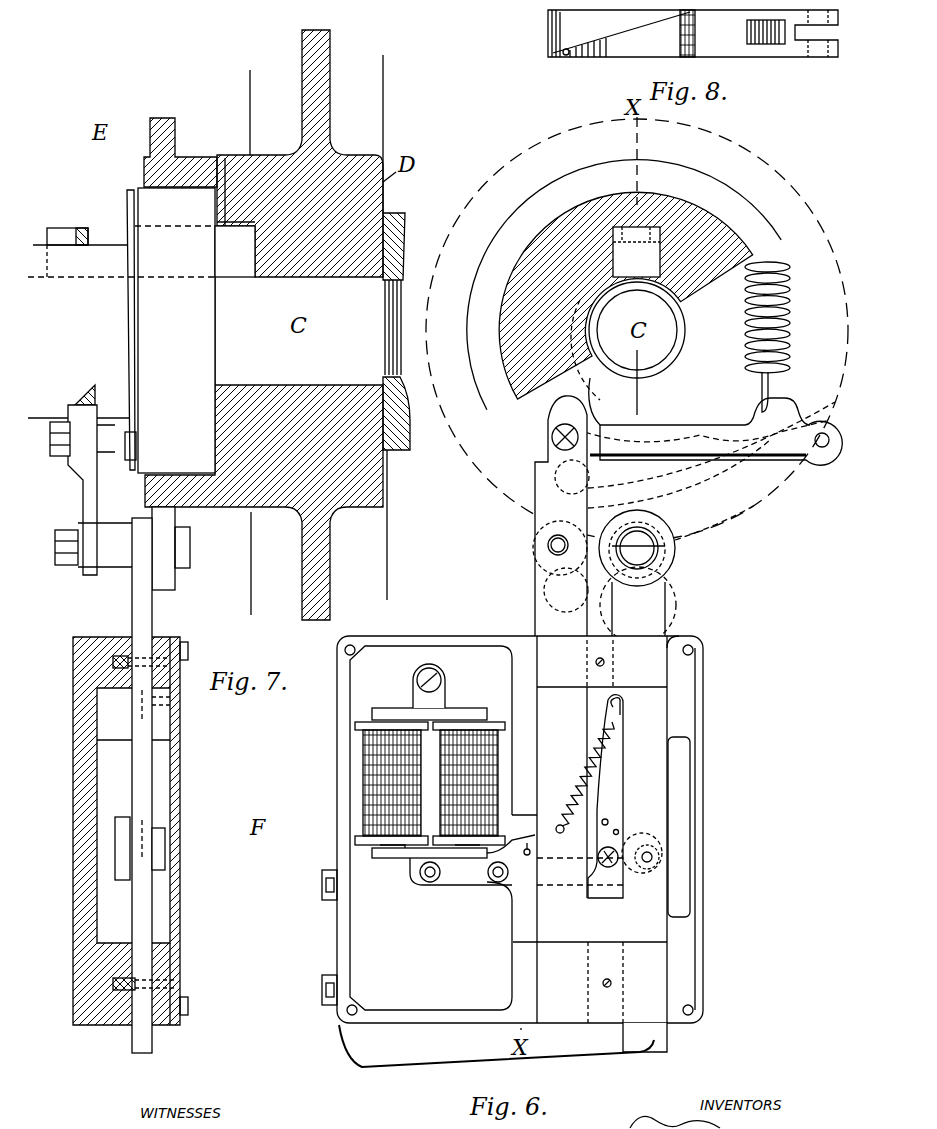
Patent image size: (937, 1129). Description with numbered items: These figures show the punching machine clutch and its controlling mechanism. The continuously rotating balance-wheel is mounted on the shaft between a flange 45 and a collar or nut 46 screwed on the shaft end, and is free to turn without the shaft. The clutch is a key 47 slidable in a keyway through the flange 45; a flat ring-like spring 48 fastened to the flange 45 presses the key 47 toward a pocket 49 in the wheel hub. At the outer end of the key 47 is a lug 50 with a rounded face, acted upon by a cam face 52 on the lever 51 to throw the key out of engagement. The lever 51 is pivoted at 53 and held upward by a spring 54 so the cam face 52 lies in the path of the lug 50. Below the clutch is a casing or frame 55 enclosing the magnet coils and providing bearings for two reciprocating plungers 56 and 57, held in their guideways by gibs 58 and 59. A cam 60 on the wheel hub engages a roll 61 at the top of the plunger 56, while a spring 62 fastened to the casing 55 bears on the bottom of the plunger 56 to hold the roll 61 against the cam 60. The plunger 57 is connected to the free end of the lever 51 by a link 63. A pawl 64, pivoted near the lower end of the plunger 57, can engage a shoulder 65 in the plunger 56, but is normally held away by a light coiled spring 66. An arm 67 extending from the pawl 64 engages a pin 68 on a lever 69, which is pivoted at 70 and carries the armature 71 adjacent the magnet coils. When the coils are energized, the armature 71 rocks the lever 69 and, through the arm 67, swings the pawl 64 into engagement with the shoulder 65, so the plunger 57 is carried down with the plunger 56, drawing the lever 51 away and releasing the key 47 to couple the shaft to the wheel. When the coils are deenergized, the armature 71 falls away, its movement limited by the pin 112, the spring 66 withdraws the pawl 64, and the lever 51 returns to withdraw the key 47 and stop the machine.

In FIG. 7, the flange 45 is at (176, 330).
In FIG. 7, the collar or nut 46 is at (410, 437).
In FIG. 7, the key 47 is at (235, 251).
In FIG. 8, the key 47 is at (636, 252).
In FIG. 7, the ring-like spring 48 is at (127, 212).
In FIG. 7, the pocket 49 is at (232, 182).
In FIG. 7, the lug 50 is at (55, 228).
In FIG. 7, the lever 51 is at (97, 403).
In FIG. 8, the lever 51 is at (713, 275).
In FIG. 8, the cam face 52 is at (598, 44).
In FIG. 8, the pivot 53 is at (815, 462).
In FIG. 8, the spring 54 is at (790, 303).
In FIG. 7, the casing or frame 55 is at (73, 742).
In FIG. 6, the casing or frame 55 is at (345, 742).
In FIG. 8, the plunger 56 is at (665, 625).
In FIG. 7, the plunger 57 is at (132, 600).
In FIG. 8, the plunger 57 is at (535, 622).
In FIG. 6, the plunger 57 is at (645, 1037).
In FIG. 7, the gib 58 is at (168, 637).
In FIG. 6, the gib 58 is at (600, 663).
In FIG. 7, the gib 59 is at (160, 1028).
In FIG. 6, the gib 59 is at (605, 982).
In FIG. 7, the cam 60 is at (175, 118).
In FIG. 8, the cam 60 is at (522, 162).
In FIG. 7, the roll 61 is at (175, 577).
In FIG. 8, the roll 61 is at (676, 548).
In FIG. 6, the spring 62 is at (348, 1068).
In FIG. 7, the link 63 is at (83, 497).
In FIG. 8, the link 63 is at (561, 469).
In FIG. 6, the pawl 64 is at (612, 793).
In FIG. 6, the shoulder 65 is at (625, 700).
In FIG. 6, the coiled spring 66 is at (575, 782).
In FIG. 7, the arm 67 is at (118, 880).
In FIG. 6, the arm 67 is at (632, 820).
In FIG. 6, the pin 68 is at (652, 857).
In FIG. 6, the lever 69 is at (461, 871).
In FIG. 6, the pivot 70 is at (495, 882).
In FIG. 6, the armature 71 is at (400, 858).
In FIG. 6, the pin 112 is at (515, 841).